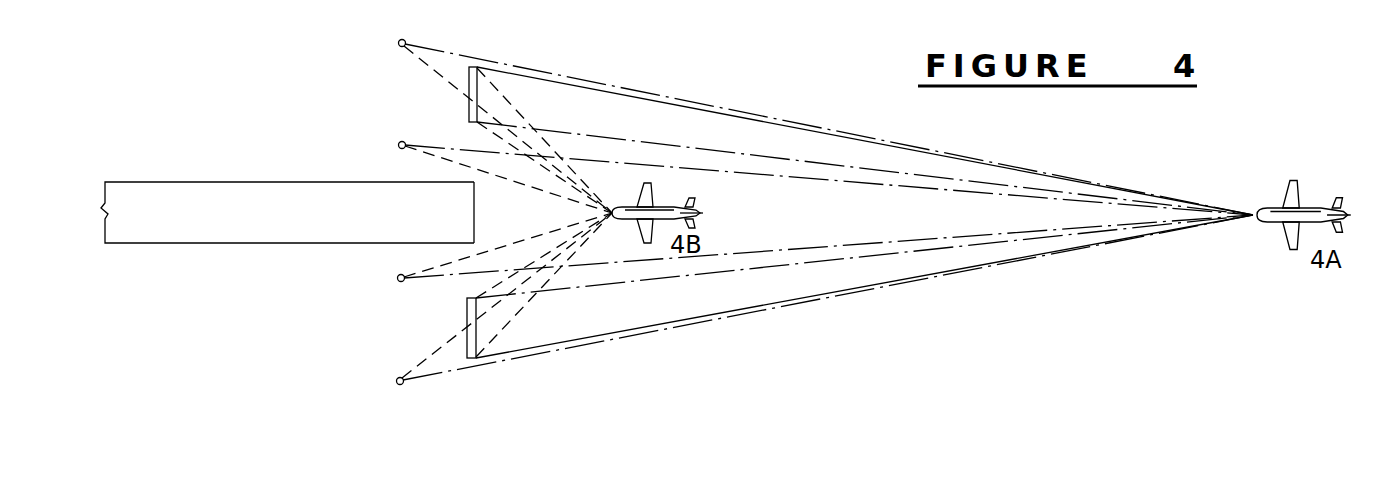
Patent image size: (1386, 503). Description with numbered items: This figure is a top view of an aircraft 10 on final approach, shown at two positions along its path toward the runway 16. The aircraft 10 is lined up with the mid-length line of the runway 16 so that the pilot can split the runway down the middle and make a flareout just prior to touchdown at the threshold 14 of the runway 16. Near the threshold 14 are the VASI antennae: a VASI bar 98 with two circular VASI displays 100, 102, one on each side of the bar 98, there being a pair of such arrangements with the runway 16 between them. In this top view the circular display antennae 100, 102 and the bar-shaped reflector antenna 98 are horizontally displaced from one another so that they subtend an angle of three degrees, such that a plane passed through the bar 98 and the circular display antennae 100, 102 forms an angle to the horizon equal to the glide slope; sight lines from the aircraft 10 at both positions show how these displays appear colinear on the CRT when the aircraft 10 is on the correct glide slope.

The aircraft 10 is at (694, 203).
The threshold 14 is at (475, 213).
The runway 16 is at (205, 219).
The VASI bar 98 is at (469, 98).
The circular VASI display 100 is at (398, 43).
The circular VASI display 102 is at (398, 144).